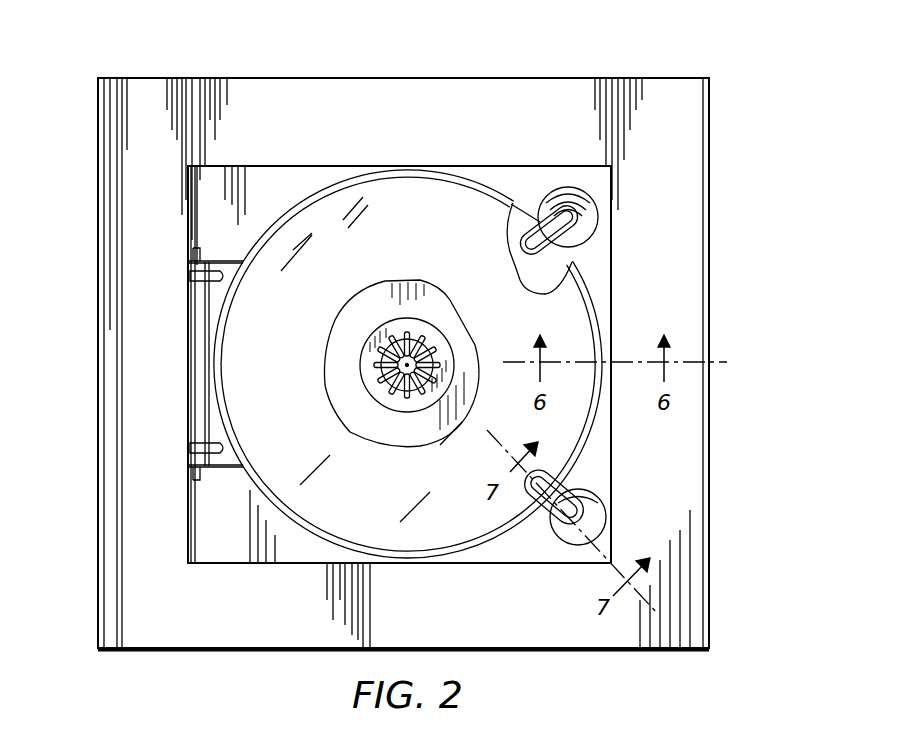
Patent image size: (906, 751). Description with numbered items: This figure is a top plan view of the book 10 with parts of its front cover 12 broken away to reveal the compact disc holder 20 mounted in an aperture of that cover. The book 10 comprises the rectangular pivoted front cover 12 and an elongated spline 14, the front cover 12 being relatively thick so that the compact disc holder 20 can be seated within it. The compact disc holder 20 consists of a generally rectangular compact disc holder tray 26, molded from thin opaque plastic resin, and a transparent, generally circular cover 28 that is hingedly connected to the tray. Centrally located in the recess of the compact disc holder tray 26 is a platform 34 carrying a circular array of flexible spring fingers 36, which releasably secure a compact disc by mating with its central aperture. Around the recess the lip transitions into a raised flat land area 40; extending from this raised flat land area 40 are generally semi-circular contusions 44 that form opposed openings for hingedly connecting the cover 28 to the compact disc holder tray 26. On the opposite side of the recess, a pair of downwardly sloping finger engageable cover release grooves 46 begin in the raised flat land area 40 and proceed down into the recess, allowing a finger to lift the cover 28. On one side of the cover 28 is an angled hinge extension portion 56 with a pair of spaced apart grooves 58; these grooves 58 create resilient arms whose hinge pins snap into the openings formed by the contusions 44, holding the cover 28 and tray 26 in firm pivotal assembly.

The book 10 is at (712, 244).
The front cover 12 is at (448, 97).
The spline 14 is at (98, 364).
The compact disc holder 20 is at (258, 185).
The compact disc holder tray 26 is at (530, 172).
The cover 28 is at (343, 500).
The platform 34 is at (428, 325).
The flexible spring fingers 36 is at (417, 393).
The raised flat land area 40 is at (243, 528).
The semi-circular contusions 44 is at (190, 212).
The finger engageable cover release grooves 46 is at (580, 215).
The angled hinge extension portion 56 is at (190, 372).
The grooves 58 is at (190, 272).